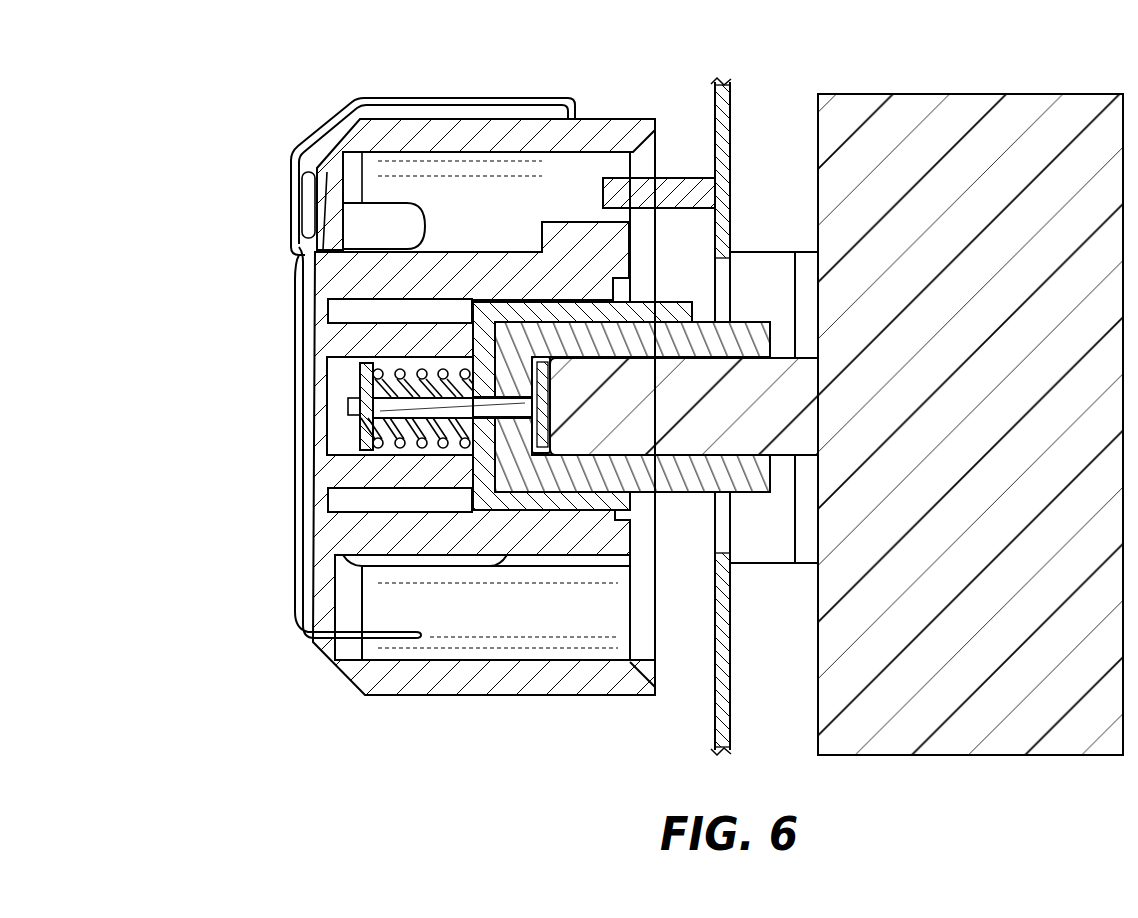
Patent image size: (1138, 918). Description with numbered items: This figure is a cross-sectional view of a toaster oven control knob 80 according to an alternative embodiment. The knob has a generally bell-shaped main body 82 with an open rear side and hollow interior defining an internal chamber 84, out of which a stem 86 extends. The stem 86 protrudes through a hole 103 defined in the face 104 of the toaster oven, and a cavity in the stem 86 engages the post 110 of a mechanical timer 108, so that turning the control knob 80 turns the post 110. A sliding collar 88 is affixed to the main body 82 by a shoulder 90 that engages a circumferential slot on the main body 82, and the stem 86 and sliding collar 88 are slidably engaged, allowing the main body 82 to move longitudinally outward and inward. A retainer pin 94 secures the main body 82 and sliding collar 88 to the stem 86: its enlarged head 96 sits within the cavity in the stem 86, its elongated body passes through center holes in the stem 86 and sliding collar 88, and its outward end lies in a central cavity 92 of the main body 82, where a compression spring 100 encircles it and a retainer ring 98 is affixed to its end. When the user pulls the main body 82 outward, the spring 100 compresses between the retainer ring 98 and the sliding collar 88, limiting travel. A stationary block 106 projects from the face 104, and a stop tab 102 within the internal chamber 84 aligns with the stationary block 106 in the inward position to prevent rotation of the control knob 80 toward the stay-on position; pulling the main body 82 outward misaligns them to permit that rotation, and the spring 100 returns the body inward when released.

The toaster oven control knob 80 is at (294, 94).
The main body 82 is at (365, 680).
The internal chamber 84 is at (607, 615).
The stem 86 is at (677, 472).
The sliding collar 88 is at (660, 498).
The shoulder 90 is at (622, 283).
The central cavity 92 is at (338, 378).
The retainer pin 94 is at (392, 408).
The enlarged head 96 is at (542, 403).
The retainer ring 98 is at (360, 438).
The compression spring 100 is at (393, 450).
The stop tab 102 is at (557, 192).
The hole 103 is at (728, 285).
The face 104 is at (728, 127).
The stationary block 106 is at (660, 190).
The mechanical timer 108 is at (1035, 94).
The post 110 is at (679, 412).